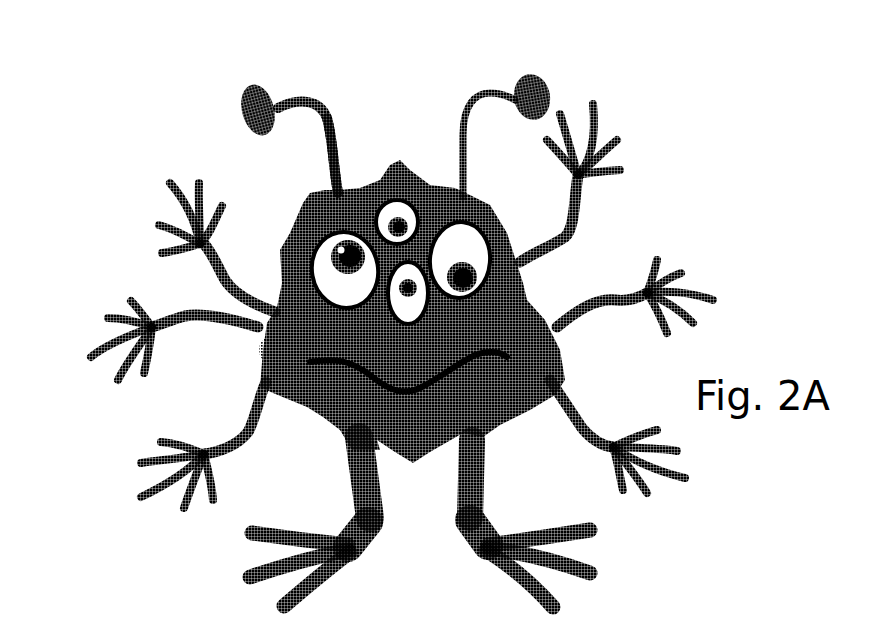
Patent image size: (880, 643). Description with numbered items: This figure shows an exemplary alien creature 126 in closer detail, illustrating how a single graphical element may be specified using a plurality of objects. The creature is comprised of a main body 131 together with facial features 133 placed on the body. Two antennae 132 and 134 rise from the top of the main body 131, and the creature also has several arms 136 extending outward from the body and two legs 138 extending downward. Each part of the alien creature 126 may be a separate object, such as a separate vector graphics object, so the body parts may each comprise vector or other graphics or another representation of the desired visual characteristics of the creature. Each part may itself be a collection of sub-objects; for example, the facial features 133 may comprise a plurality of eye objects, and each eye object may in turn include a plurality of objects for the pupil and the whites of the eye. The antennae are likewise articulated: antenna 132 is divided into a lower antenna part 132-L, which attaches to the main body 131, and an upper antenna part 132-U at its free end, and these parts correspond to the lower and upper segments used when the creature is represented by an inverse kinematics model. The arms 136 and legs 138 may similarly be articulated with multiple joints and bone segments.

The alien creature 126 is at (718, 92).
The main body 131 is at (330, 387).
The antenna 132 is at (330, 160).
The upper antenna part 132-U is at (258, 85).
The lower antenna part 132-L is at (330, 112).
The facial features 133 is at (357, 213).
The antenna 134 is at (548, 78).
The arms 136 is at (160, 224).
The legs 138 is at (250, 578).